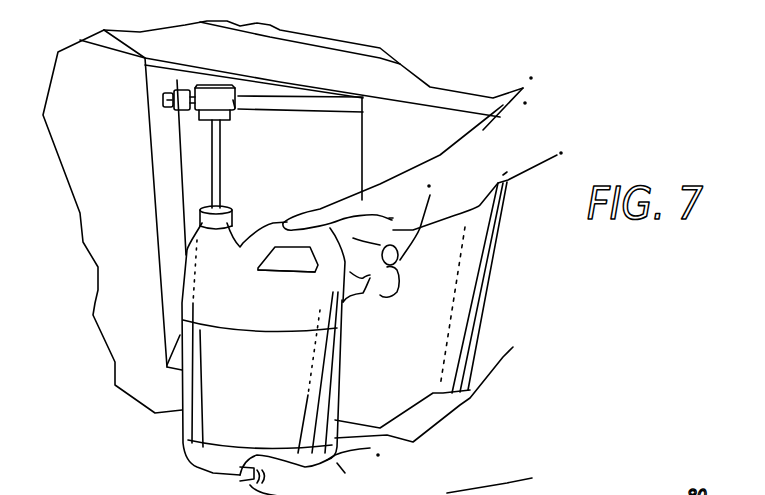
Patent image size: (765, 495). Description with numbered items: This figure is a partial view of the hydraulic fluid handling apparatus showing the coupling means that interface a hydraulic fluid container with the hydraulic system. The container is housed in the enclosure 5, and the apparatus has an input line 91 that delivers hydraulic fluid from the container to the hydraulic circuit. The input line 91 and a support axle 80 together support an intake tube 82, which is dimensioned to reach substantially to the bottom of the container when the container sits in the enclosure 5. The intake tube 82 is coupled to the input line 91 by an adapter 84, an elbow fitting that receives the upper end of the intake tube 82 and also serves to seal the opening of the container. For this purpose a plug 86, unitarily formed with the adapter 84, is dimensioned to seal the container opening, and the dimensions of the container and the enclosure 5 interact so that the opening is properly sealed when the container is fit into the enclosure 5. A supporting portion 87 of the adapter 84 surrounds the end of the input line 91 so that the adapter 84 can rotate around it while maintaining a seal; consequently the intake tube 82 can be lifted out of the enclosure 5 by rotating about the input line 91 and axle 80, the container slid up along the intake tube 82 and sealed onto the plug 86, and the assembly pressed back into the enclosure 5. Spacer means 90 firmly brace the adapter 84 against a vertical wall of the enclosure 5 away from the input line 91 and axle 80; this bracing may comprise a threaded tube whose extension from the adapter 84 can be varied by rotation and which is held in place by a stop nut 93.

The enclosure 5 is at (342, 128).
The support axle 80 is at (343, 103).
The intake tube 82 is at (213, 190).
The adapter 84 is at (233, 105).
The plug 86 is at (223, 122).
The supporting portion 87 is at (213, 87).
The spacer means 90 is at (207, 109).
The input line 91 is at (160, 93).
The stop nut 93 is at (175, 108).